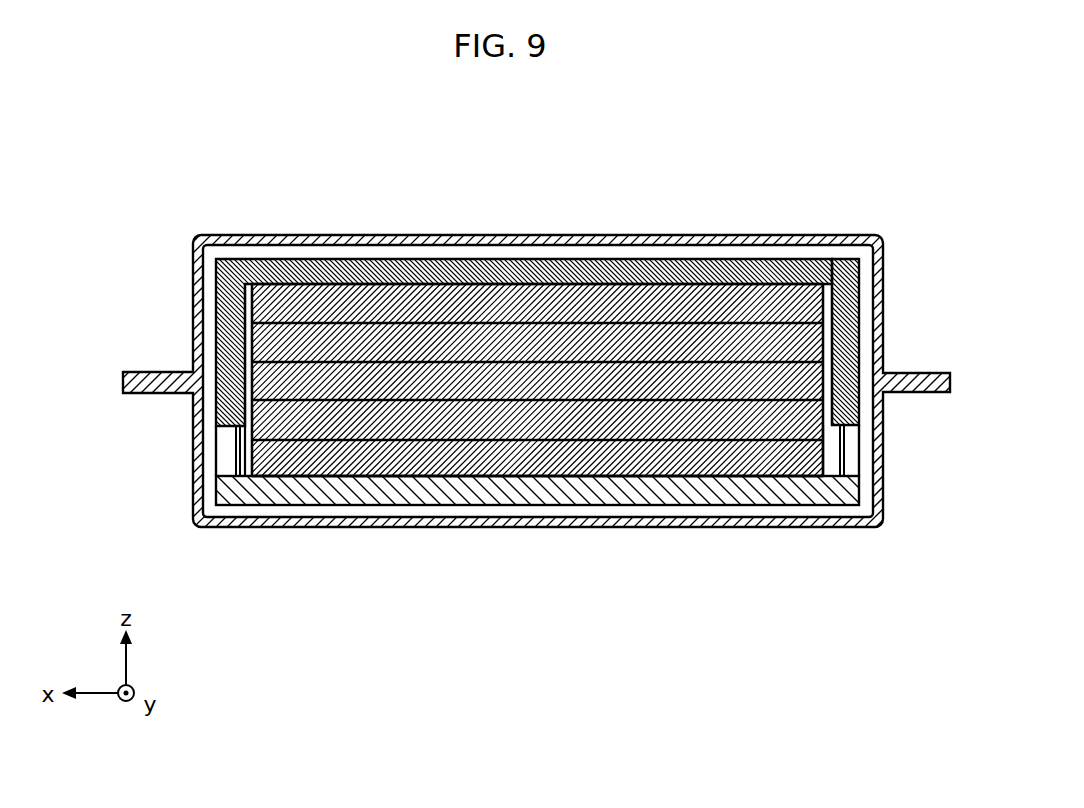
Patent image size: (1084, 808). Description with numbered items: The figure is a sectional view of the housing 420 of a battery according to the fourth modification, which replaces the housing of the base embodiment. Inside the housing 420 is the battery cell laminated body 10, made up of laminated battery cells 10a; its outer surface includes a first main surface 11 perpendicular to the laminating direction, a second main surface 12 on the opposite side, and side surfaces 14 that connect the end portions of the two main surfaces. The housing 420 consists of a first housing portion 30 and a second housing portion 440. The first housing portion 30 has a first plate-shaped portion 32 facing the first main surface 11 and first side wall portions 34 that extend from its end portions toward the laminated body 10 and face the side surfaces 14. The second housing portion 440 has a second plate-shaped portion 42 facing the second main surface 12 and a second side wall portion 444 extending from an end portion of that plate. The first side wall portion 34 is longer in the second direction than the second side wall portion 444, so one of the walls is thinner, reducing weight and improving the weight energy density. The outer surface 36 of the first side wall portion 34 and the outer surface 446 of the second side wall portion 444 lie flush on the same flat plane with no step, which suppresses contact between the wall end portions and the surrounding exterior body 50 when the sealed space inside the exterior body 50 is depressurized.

The battery cell laminated body 10 is at (443, 445).
The battery cell 10a is at (530, 307).
The first main surface 11 is at (378, 284).
The second main surface 12 is at (328, 480).
The side surface 14 is at (829, 433).
The first housing portion 30 is at (545, 273).
The first plate-shaped portion 32 is at (777, 270).
The first side wall portion 34 is at (846, 325).
The surface 36 is at (866, 325).
The second plate-shaped portion 42 is at (745, 490).
The exterior body 50 is at (597, 236).
The housing 420 is at (208, 268).
The second housing portion 440 is at (537, 536).
The second side wall portion 444 is at (845, 468).
The surface 446 is at (864, 433).